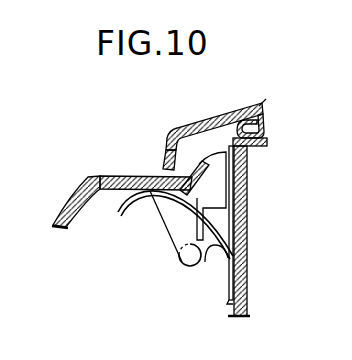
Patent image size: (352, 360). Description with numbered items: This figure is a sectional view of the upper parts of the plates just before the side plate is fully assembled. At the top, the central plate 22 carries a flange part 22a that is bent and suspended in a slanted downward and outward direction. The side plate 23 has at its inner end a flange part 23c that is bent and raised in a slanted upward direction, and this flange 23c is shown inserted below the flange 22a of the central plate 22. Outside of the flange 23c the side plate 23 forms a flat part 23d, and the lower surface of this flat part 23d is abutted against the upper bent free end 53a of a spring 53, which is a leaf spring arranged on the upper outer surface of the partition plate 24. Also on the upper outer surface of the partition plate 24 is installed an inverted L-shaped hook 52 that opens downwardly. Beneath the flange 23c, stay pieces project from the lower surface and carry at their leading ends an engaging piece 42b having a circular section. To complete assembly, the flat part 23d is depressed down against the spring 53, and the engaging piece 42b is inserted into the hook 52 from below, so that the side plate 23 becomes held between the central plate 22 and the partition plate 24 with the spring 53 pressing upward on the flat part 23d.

The central plate 22 is at (198, 122).
The flange part 22a is at (164, 160).
The flange part 23c is at (268, 141).
The side plate 23 is at (66, 207).
The flat part 23d is at (119, 189).
The upper bent free end 53a is at (136, 206).
The engaging piece 42b is at (186, 256).
The inverted L-shaped hook 52 is at (233, 222).
The spring 53 is at (233, 260).
The partition plate 24 is at (230, 311).